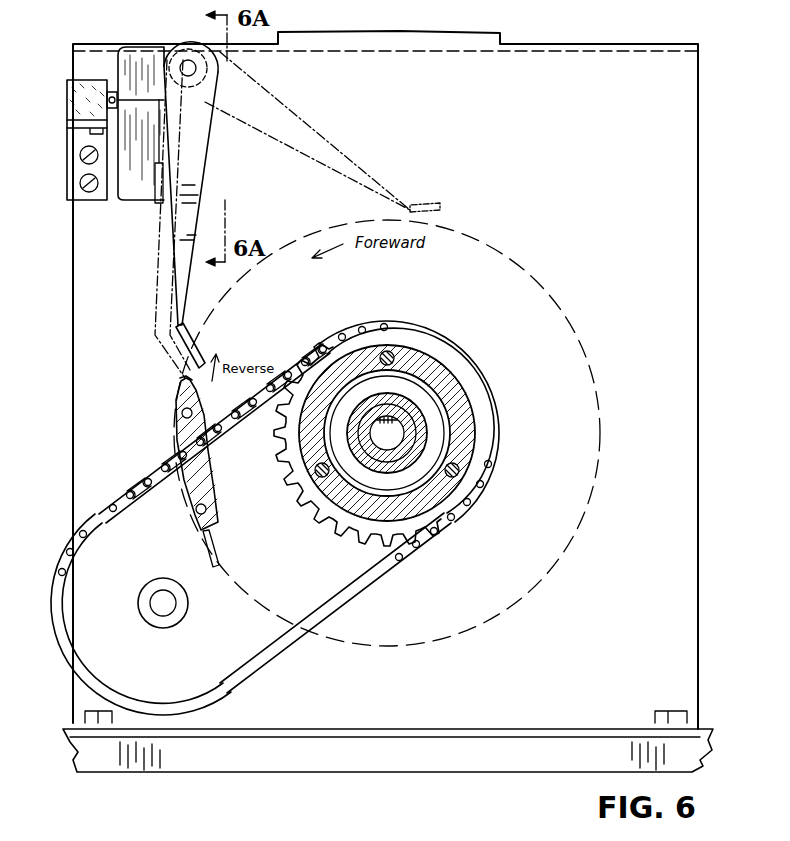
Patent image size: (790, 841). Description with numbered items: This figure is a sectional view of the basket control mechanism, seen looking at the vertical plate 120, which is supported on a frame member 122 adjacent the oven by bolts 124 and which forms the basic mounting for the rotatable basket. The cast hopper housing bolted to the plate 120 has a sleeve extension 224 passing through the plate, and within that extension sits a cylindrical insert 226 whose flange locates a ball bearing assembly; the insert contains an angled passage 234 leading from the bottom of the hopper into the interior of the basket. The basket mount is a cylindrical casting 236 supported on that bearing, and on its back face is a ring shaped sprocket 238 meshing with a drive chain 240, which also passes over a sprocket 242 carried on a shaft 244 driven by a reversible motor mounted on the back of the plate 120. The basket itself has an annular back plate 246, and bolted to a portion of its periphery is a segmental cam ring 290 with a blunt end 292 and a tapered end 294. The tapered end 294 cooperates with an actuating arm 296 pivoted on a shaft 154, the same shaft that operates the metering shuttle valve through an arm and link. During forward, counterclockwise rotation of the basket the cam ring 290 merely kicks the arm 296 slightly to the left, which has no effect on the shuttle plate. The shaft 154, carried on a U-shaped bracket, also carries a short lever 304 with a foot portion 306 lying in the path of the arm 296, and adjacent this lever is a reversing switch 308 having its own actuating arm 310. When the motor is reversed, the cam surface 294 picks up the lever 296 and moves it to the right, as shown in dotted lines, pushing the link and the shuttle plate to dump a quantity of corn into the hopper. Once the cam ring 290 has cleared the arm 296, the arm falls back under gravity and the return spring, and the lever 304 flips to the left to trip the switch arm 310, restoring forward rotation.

The vertical plate 120 is at (92, 346).
The frame member 122 is at (510, 760).
The bolts 124 is at (90, 712).
The shaft 154 is at (185, 60).
The sleeve extension 224 is at (420, 418).
The cylindrical insert 226 is at (412, 440).
The angled passage 234 is at (394, 437).
The cylindrical casting 236 is at (438, 372).
The ring shaped sprocket 238 is at (282, 458).
The drive chain 240 is at (304, 346).
The sprocket 242 is at (120, 528).
The shaft 244 is at (158, 600).
The annular back plate 246 is at (500, 627).
The segmental cam ring 290 is at (207, 483).
The blunt end 292 is at (222, 558).
The tapered end 294 is at (180, 378).
The actuating arm 296 is at (301, 126).
The short lever 304 is at (142, 198).
The foot portion 306 is at (157, 215).
The reversing switch 308 is at (67, 80).
The actuating arm 310 is at (110, 92).